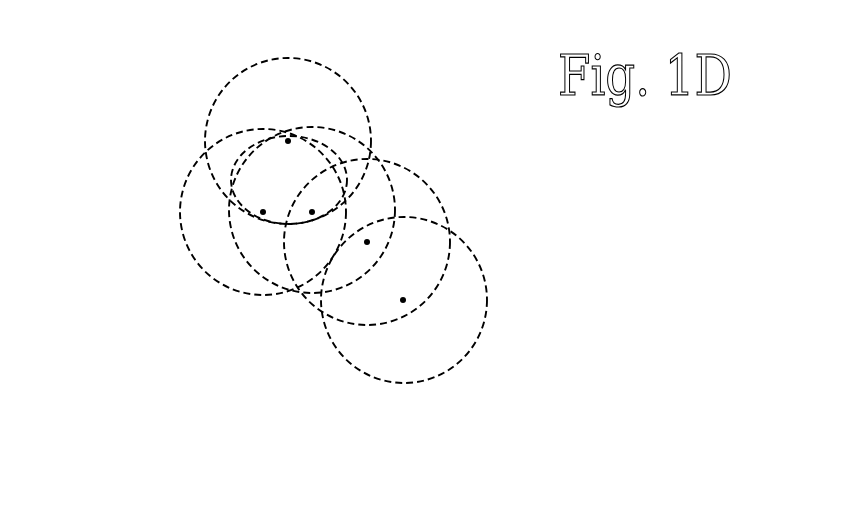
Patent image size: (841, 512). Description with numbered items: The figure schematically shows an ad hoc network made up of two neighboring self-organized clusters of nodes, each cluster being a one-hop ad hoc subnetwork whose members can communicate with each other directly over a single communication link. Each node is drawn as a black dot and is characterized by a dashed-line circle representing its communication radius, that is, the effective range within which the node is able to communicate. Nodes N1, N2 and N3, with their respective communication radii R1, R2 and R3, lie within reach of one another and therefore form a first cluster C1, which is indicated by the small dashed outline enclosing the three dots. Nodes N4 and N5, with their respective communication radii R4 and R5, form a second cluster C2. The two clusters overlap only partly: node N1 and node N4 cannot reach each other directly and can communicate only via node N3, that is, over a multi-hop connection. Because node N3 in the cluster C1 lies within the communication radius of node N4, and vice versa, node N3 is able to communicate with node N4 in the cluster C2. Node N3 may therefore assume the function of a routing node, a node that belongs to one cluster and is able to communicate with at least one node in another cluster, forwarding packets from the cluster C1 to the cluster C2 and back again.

The cluster C1 is at (135, 97).
The cluster C2 is at (313, 328).
The communication radius R1 is at (195, 167).
The communication radius R2 is at (220, 93).
The communication radius R3 is at (380, 162).
The communication radius R4 is at (437, 197).
The communication radius R5 is at (472, 253).
The node N1 is at (263, 209).
The node N2 is at (288, 144).
The node N3 is at (312, 209).
The node N4 is at (367, 239).
The node N5 is at (403, 297).